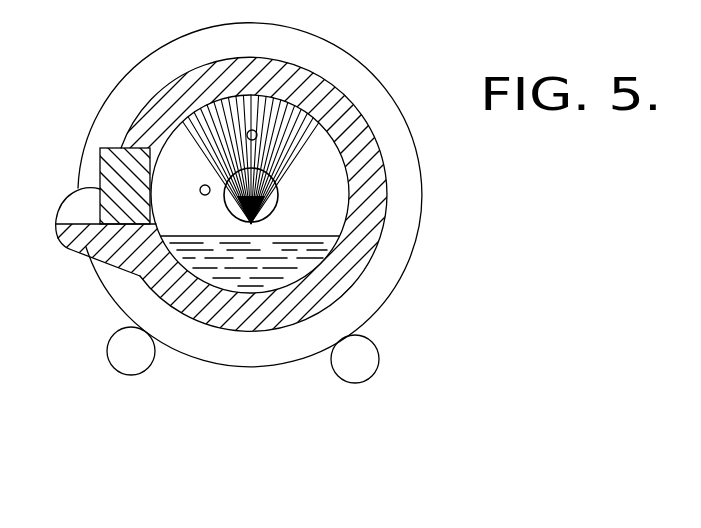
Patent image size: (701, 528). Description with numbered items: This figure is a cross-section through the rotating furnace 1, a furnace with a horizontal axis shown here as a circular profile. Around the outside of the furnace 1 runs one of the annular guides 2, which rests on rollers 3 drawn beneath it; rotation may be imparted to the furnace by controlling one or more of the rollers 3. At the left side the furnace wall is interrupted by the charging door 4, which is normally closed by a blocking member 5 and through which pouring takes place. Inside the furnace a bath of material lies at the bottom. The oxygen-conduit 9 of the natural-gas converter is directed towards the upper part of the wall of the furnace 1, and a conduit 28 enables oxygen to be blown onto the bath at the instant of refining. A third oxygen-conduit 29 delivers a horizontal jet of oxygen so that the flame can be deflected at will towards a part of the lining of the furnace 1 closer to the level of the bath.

The rotating furnace 1 is at (383, 186).
The annular guides 2 is at (393, 262).
The rollers 3 is at (113, 363).
The charging door 4 is at (77, 212).
The blocking member 5 is at (113, 147).
The oxygen-conduit 9 is at (251, 226).
The conduit 28 is at (257, 131).
The third oxygen-conduit 29 is at (201, 194).